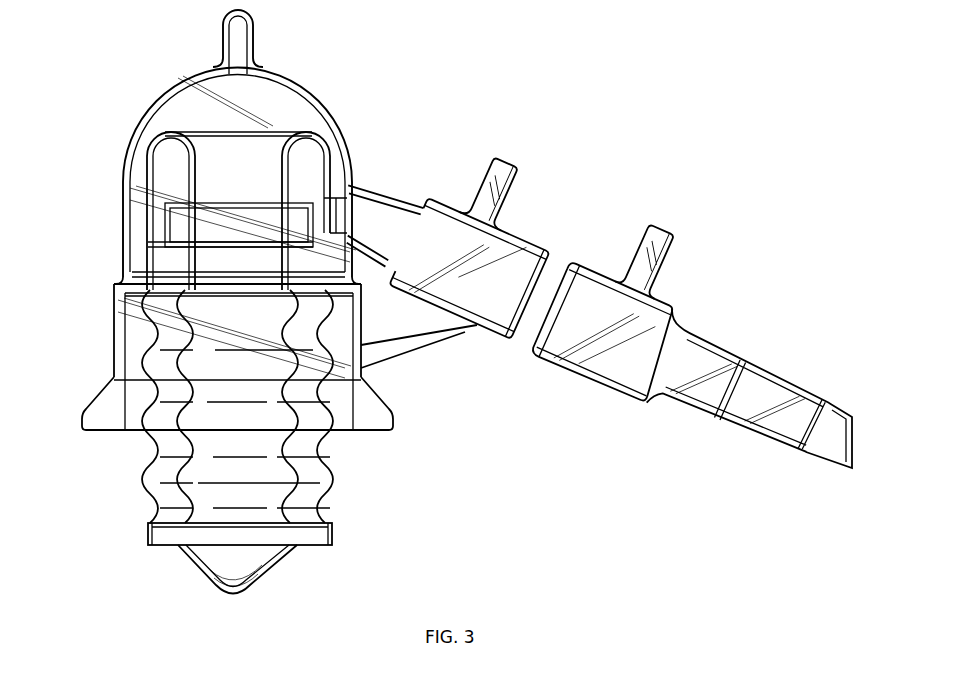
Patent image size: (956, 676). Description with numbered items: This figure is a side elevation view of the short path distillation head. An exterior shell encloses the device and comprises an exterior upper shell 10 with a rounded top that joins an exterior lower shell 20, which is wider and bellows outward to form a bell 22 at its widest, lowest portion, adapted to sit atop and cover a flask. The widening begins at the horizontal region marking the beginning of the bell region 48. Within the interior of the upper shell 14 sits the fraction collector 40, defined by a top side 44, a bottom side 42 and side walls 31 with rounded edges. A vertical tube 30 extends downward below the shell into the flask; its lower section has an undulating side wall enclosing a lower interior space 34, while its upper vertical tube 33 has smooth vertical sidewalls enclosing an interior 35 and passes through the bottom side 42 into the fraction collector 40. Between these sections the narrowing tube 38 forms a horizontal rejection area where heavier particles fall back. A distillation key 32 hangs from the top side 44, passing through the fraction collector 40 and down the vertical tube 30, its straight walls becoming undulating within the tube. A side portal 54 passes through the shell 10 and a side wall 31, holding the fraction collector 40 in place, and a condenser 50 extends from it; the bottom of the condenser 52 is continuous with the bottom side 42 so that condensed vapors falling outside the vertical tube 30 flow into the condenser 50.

The exterior upper shell 10 is at (162, 90).
The interior of upper shell 14 is at (140, 160).
The top side of fraction collector 44 is at (212, 135).
The side walls of fraction collector 31 is at (148, 207).
The bottom of fraction collector 42 is at (288, 195).
The upper vertical tube 33 is at (233, 197).
The fraction collector 40 is at (250, 245).
The interior of upper vertical tube 35 is at (178, 265).
The narrowing tube 38 is at (157, 290).
The beginning of bell region 48 is at (240, 290).
The exterior of lower shell 20 is at (118, 338).
The bell of lower shell 22 is at (92, 412).
The vertical tube 30 is at (147, 483).
The interior of lower vertical tube 34 is at (177, 510).
The distillation key 32 is at (215, 570).
The side portal 54 is at (333, 210).
The condenser 50 is at (427, 218).
The bottom of condenser 52 is at (333, 247).